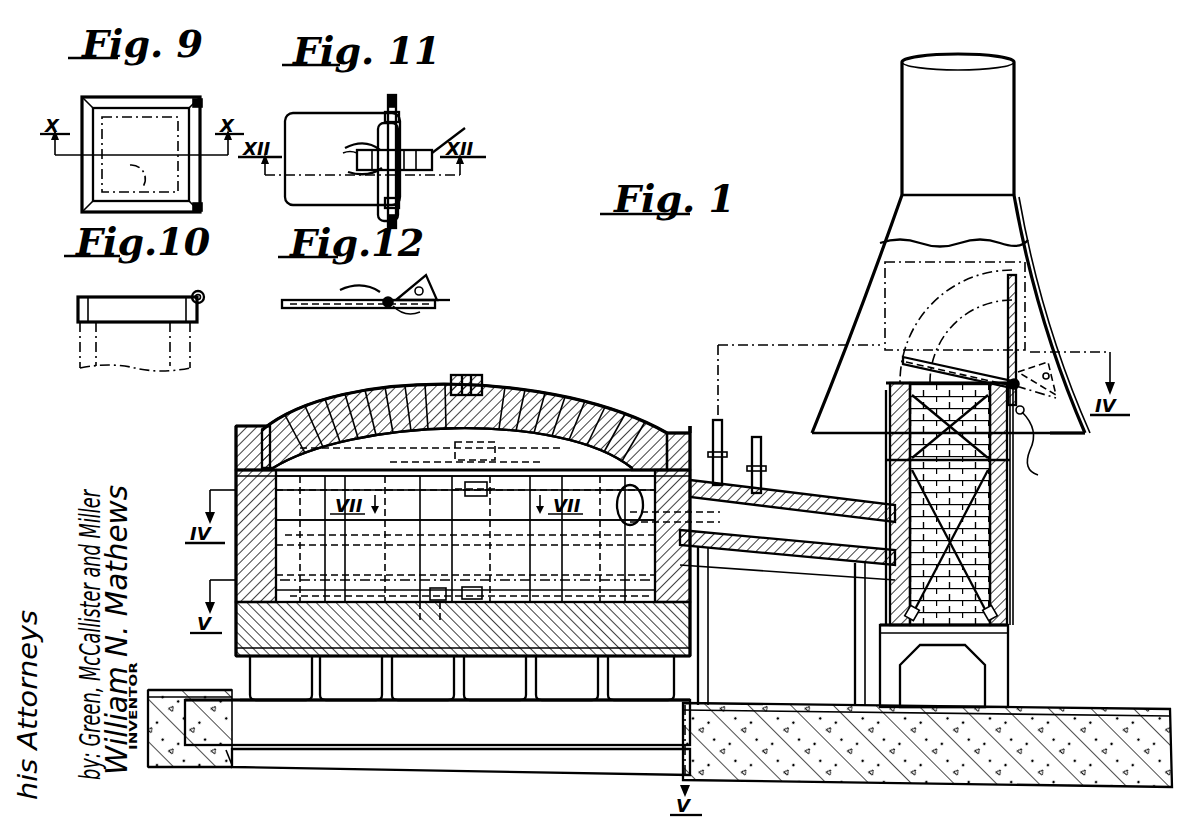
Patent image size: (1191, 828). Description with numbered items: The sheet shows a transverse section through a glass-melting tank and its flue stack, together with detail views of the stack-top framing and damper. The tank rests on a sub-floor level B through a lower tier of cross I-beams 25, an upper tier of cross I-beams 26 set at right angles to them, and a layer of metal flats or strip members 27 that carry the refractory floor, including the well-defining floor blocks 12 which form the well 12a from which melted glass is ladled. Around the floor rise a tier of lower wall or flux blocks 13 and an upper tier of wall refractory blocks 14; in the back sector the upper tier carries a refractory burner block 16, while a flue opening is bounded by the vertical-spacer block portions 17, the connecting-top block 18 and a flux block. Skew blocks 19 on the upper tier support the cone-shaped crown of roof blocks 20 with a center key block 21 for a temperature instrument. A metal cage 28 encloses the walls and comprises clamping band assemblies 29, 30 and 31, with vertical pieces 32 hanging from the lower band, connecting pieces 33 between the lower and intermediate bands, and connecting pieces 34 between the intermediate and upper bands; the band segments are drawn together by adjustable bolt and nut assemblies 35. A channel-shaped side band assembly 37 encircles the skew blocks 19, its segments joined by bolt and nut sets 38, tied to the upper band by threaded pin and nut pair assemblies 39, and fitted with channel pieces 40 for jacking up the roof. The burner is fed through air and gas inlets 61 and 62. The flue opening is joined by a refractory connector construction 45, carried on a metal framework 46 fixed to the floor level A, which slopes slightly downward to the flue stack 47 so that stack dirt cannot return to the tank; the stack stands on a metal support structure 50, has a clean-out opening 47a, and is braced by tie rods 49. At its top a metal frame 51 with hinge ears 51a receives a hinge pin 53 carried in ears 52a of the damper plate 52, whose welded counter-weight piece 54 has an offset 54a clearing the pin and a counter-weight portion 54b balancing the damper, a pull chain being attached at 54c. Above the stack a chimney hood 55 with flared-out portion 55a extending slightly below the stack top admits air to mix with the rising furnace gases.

In FIG. 1, the well-defining floor blocks 12 is at (433, 656).
In FIG. 1, the well 12a is at (410, 611).
In FIG. 1, the lower wall or flux blocks 13 is at (206, 560).
In FIG. 1, the upper tier of wall refractory blocks 14 is at (465, 505).
In FIG. 1, the refractory burner block 16 is at (632, 526).
In FIG. 1, the vertical-spacer block portions 17 is at (742, 517).
In FIG. 1, the connecting-top block 18 is at (640, 470).
In FIG. 1, the skew blocks 19 is at (262, 428).
In FIG. 1, the roof arch refractory blocks 20 is at (505, 394).
In FIG. 1, the center key block 21 is at (478, 376).
In FIG. 1, the lower tier of cross I-beams 25 is at (436, 734).
In FIG. 1, the upper tier of cross I-beams 26 is at (384, 674).
In FIG. 1, the metal flats or strip members 27 is at (288, 656).
In FIG. 1, the metal cage 28 is at (236, 470).
In FIG. 1, the lower clamping band assembly 29 is at (240, 650).
In FIG. 1, the intermediate clamping band assembly 30 is at (236, 580).
In FIG. 1, the upper clamping band assembly 31 is at (236, 479).
In FIG. 1, the vertical pieces 32 is at (470, 597).
In FIG. 1, the connecting pieces 33 is at (472, 595).
In FIG. 1, the connecting pieces 34 is at (318, 540).
In FIG. 1, the adjustable bolt and nut assemblies 35 is at (485, 498).
In FIG. 1, the channel-shaped side band assembly 37 is at (236, 440).
In FIG. 1, the bolt and nut sets 38 is at (495, 450).
In FIG. 1, the threaded pin and nut pair assemblies 39 is at (418, 462).
In FIG. 1, the channel pieces 40 is at (350, 450).
In FIG. 1, the refractory connector or tunnel construction 45 is at (803, 503).
In FIG. 1, the metal framework 46 is at (850, 598).
In FIG. 9, the flue stack 47 is at (140, 154).
In FIG. 10, the flue stack 47 is at (192, 340).
In FIG. 1, the flue stack 47 is at (975, 557).
In FIG. 1, the clean-out opening 47a is at (948, 612).
In FIG. 1, the tie rods 49 is at (960, 455).
In FIG. 1, the metal support structure 50 is at (988, 640).
In FIG. 9, the metal frame 51 is at (82, 178).
In FIG. 10, the metal frame 51 is at (78, 306).
In FIG. 1, the metal frame 51 is at (890, 390).
In FIG. 9, the hinge ears 51a is at (198, 99).
In FIG. 10, the hinge ears 51a is at (204, 293).
In FIG. 11, the damper plate or member 52 is at (307, 120).
In FIG. 12, the damper plate or member 52 is at (318, 308).
In FIG. 1, the damper plate or member 52 is at (1010, 327).
In FIG. 11, the damper ears 52a is at (400, 117).
In FIG. 12, the damper ears 52a is at (398, 310).
In FIG. 11, the hinge pin 53 is at (397, 104).
In FIG. 12, the hinge pin 53 is at (385, 306).
In FIG. 1, the hinge pin 53 is at (1016, 380).
In FIG. 11, the counter-weight piece 54 is at (426, 142).
In FIG. 12, the counter-weight piece 54 is at (484, 316).
In FIG. 1, the counter-weight piece 54 is at (1066, 424).
In FIG. 11, the offset 54a is at (380, 176).
In FIG. 12, the offset 54a is at (392, 298).
In FIG. 11, the counter-weight portion 54b is at (467, 133).
In FIG. 12, the counter-weight portion 54b is at (428, 280).
In FIG. 1, the pull chain attachment point 54c is at (1042, 440).
In FIG. 1, the chimney hood 55 is at (1043, 285).
In FIG. 1, the flared-out portion 55a is at (1075, 437).
In FIG. 1, the air inlet 61 is at (722, 434).
In FIG. 1, the gas inlet 62 is at (760, 452).
In FIG. 1, the floor level A is at (1068, 709).
In FIG. 1, the sub-floor level B is at (226, 752).